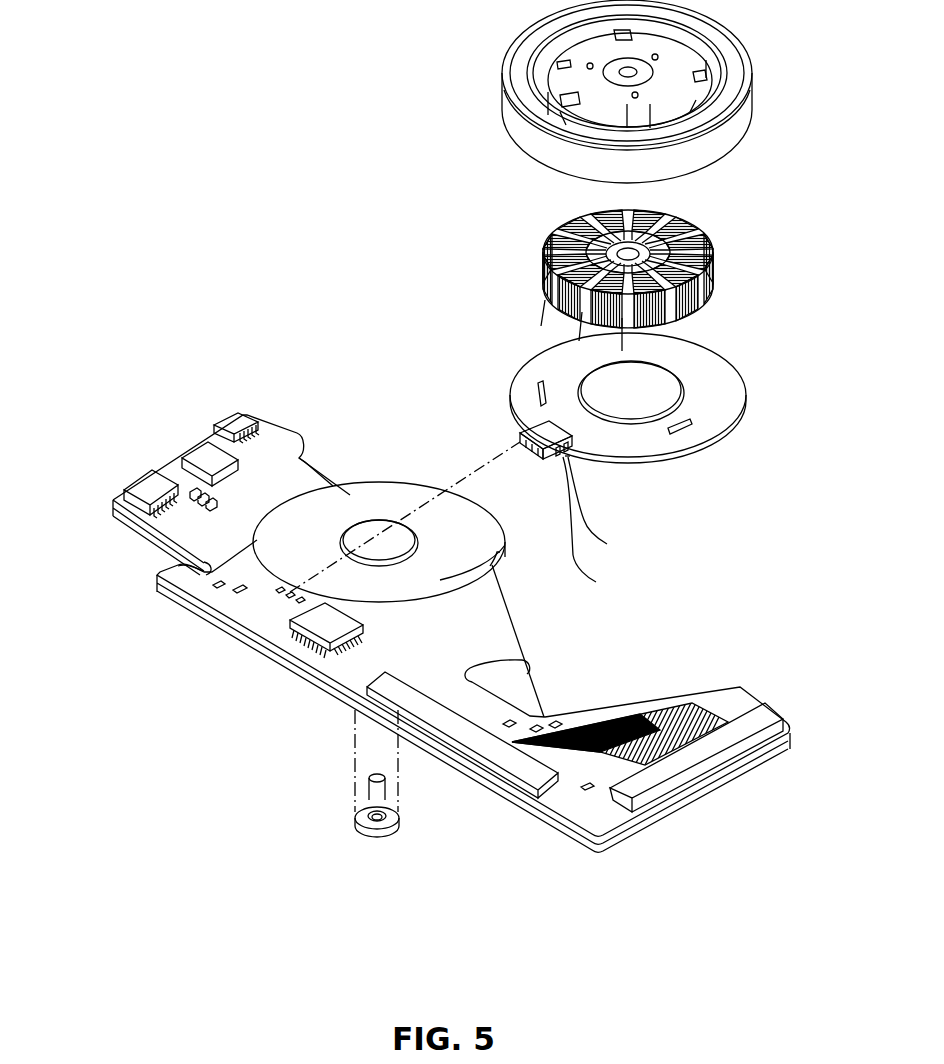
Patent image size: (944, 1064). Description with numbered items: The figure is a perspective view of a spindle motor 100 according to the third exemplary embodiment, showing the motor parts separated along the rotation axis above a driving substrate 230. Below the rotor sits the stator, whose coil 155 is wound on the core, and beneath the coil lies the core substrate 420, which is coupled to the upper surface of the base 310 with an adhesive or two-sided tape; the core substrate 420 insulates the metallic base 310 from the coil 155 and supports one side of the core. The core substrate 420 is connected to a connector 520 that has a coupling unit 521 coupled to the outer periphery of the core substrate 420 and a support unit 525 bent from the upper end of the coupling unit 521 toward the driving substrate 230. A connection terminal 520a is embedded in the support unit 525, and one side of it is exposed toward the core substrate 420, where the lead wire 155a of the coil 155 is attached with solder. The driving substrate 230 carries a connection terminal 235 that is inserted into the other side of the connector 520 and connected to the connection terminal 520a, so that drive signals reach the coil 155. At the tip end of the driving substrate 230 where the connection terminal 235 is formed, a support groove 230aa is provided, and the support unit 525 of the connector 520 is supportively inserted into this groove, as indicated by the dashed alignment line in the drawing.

The spindle motor 100 is at (525, 201).
The coil 155 is at (707, 240).
The lead wire 155a is at (700, 366).
The core substrate 420 is at (732, 397).
The connection terminal 520a is at (566, 433).
The connector 520 is at (651, 547).
The coupling unit 521 is at (609, 510).
The support unit 525 is at (601, 526).
The base 310 is at (520, 699).
The driving substrate 230 is at (578, 803).
The support groove 230aa is at (192, 557).
The connection terminal 235 is at (290, 594).